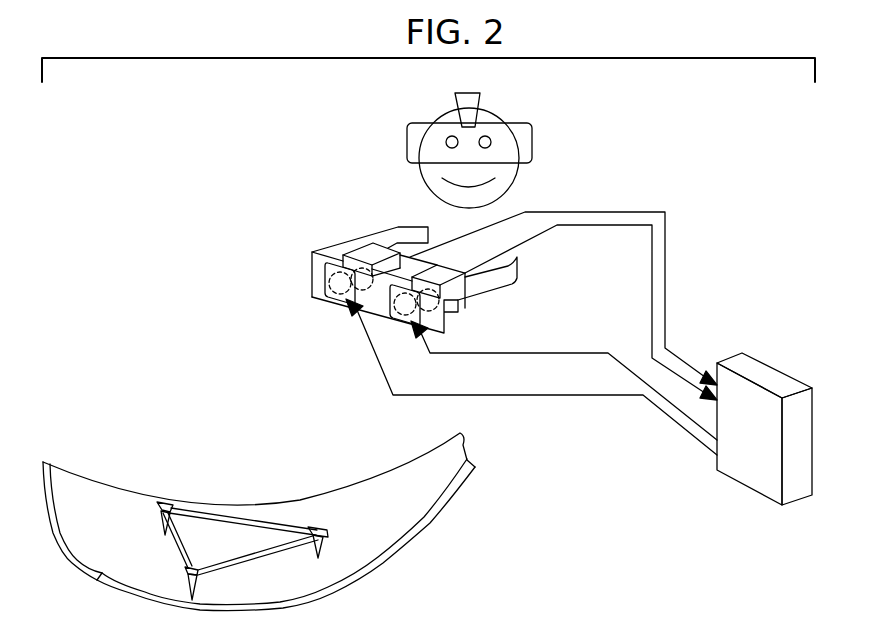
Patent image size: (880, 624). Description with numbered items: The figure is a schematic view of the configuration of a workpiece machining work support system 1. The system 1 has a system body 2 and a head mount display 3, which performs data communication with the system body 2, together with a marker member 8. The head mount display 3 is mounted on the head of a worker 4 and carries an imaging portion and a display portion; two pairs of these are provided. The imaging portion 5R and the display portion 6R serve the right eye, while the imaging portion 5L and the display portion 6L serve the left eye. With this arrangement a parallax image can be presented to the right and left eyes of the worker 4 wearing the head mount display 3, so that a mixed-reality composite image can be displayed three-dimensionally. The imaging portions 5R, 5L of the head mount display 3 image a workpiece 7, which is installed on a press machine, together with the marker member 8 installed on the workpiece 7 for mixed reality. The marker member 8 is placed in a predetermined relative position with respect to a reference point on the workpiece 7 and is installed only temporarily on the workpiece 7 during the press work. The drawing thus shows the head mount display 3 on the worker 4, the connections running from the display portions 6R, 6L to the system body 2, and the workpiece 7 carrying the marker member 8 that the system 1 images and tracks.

The workpiece machining work support system 1 is at (753, 157).
The system body 2 is at (740, 473).
The head mount display (HMD) 3 is at (532, 148).
The worker 4 is at (497, 115).
The imaging portion for the right eye 5R is at (370, 248).
The imaging portion for the left eye 5L is at (462, 306).
The display portion for the right eye 6R is at (330, 296).
The display portion for the left eye 6L is at (391, 318).
The workpiece 7 is at (430, 522).
The marker member 8 is at (197, 515).